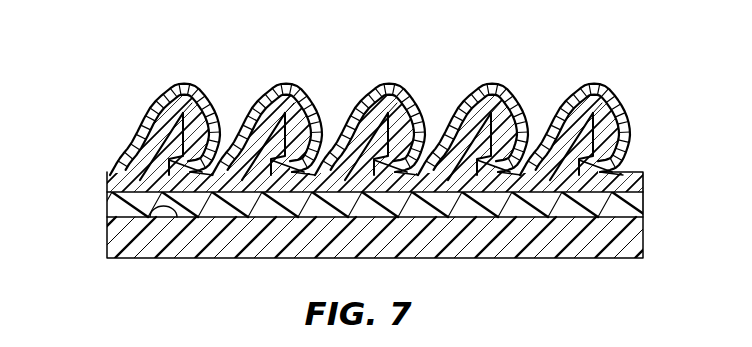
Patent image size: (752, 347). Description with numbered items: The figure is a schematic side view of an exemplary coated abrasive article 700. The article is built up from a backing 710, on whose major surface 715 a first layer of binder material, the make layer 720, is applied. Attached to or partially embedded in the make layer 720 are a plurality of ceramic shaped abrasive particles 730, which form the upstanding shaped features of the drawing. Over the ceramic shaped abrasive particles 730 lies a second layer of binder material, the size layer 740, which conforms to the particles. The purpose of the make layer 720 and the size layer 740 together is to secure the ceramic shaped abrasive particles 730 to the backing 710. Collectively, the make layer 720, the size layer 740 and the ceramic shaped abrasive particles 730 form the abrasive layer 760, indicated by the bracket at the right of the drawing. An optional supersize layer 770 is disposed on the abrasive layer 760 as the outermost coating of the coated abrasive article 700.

The coated abrasive article 700 is at (143, 52).
The backing 710 is at (128, 241).
The major surface 715 is at (177, 218).
The make layer 720 is at (125, 208).
The ceramic shaped abrasive particles 730 is at (600, 125).
The size layer 740 is at (107, 186).
The abrasive layer 760 is at (646, 165).
The supersize layer 770 is at (134, 126).